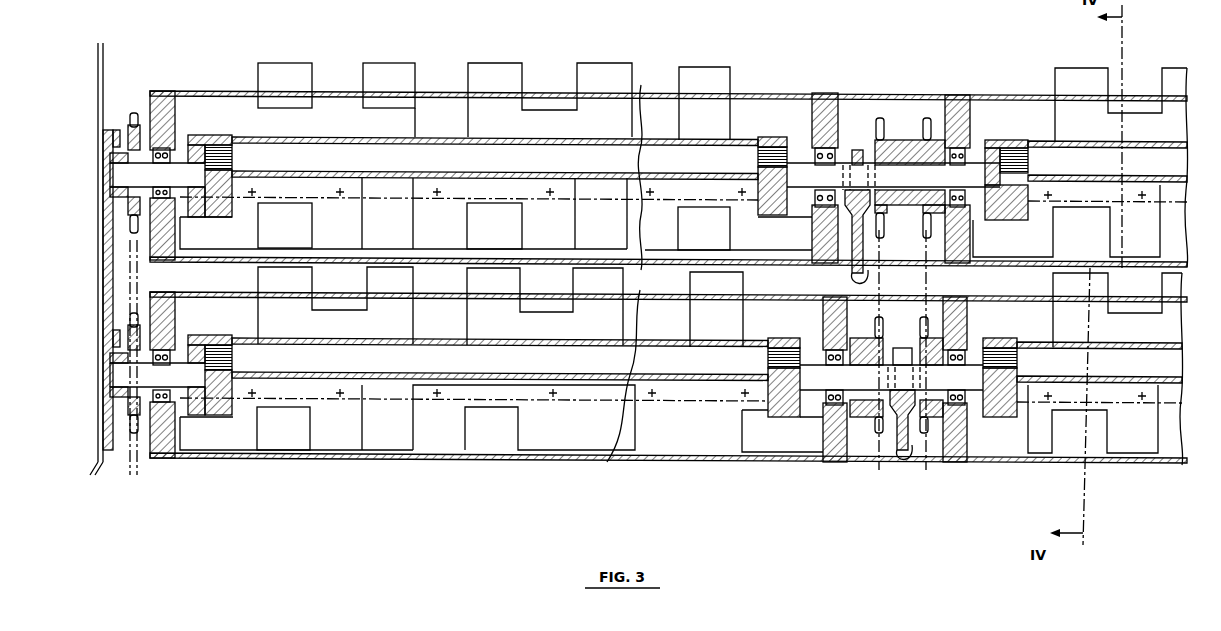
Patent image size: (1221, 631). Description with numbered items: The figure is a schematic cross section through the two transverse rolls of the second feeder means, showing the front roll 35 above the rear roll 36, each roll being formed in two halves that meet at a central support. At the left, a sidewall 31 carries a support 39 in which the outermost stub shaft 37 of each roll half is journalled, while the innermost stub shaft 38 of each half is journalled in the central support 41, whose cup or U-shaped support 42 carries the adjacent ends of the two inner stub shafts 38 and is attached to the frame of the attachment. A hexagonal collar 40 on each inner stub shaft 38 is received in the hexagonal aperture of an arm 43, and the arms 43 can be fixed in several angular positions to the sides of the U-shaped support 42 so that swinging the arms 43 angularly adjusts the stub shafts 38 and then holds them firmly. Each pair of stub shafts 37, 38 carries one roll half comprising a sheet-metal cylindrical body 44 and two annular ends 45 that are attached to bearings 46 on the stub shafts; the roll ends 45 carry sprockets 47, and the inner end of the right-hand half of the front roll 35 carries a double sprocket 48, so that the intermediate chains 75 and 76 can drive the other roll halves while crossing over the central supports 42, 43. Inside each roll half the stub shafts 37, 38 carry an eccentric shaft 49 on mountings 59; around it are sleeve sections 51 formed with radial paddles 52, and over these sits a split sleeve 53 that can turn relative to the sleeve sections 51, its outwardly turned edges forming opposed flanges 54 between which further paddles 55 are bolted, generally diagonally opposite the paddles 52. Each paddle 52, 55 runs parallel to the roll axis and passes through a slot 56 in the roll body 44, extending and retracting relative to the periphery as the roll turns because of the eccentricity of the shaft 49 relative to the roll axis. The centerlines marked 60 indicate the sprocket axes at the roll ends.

The sidewall 31 is at (98, 60).
The front roll 35 is at (437, 83).
The rear roll 36 is at (579, 462).
The outermost stub shaft 37 is at (118, 173).
The innermost stub shaft 38 is at (805, 173).
The support 39 is at (110, 215).
The hexagonal collar 40 is at (843, 145).
The support 41 is at (858, 140).
The U-shaped support 42 is at (868, 150).
The arm 43 is at (862, 274).
The cylindrical body 44 is at (192, 95).
The annular end 45 is at (157, 108).
The bearing 46 is at (163, 150).
The sprocket 47 is at (133, 113).
The double sprocket 48 is at (907, 140).
The eccentric shaft 49 is at (422, 160).
The sleeve section 51 is at (458, 180).
The paddle 52 is at (290, 80).
The split sleeve 53 is at (253, 249).
The flange 54 is at (608, 192).
The paddle 55 is at (243, 248).
The slot 56 is at (520, 88).
The mounting 59 is at (215, 140).
The pin axis 60 is at (130, 260).
The chain 75 is at (883, 300).
The chain 76 is at (923, 308).